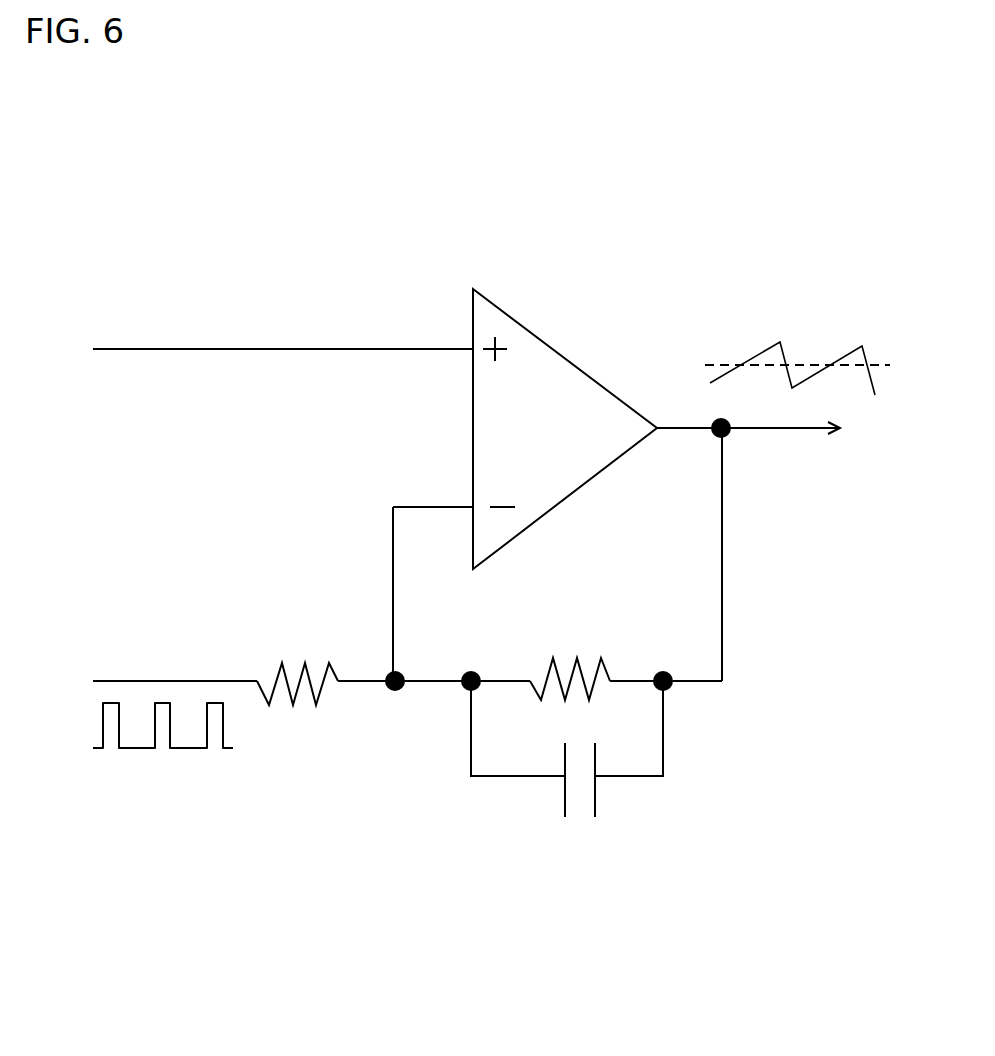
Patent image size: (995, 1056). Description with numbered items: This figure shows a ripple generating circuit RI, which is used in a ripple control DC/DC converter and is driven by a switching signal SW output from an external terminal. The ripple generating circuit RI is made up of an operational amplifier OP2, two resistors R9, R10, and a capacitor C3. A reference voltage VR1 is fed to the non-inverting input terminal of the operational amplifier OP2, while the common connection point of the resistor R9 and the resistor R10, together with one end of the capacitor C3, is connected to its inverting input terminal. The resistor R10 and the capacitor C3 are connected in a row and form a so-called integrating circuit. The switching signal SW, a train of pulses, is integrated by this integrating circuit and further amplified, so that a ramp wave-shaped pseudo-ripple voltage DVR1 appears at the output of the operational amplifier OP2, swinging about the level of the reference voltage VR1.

The ripple generating circuit RI is at (502, 247).
The operational amplifier OP2 is at (565, 429).
The reference voltage VR1 is at (508, 351).
The pseudo-ripple voltage DVR1 is at (834, 338).
The resistor R9 is at (297, 668).
The resistor R10 is at (570, 665).
The capacitor C3 is at (567, 768).
The switching signal SW is at (163, 748).